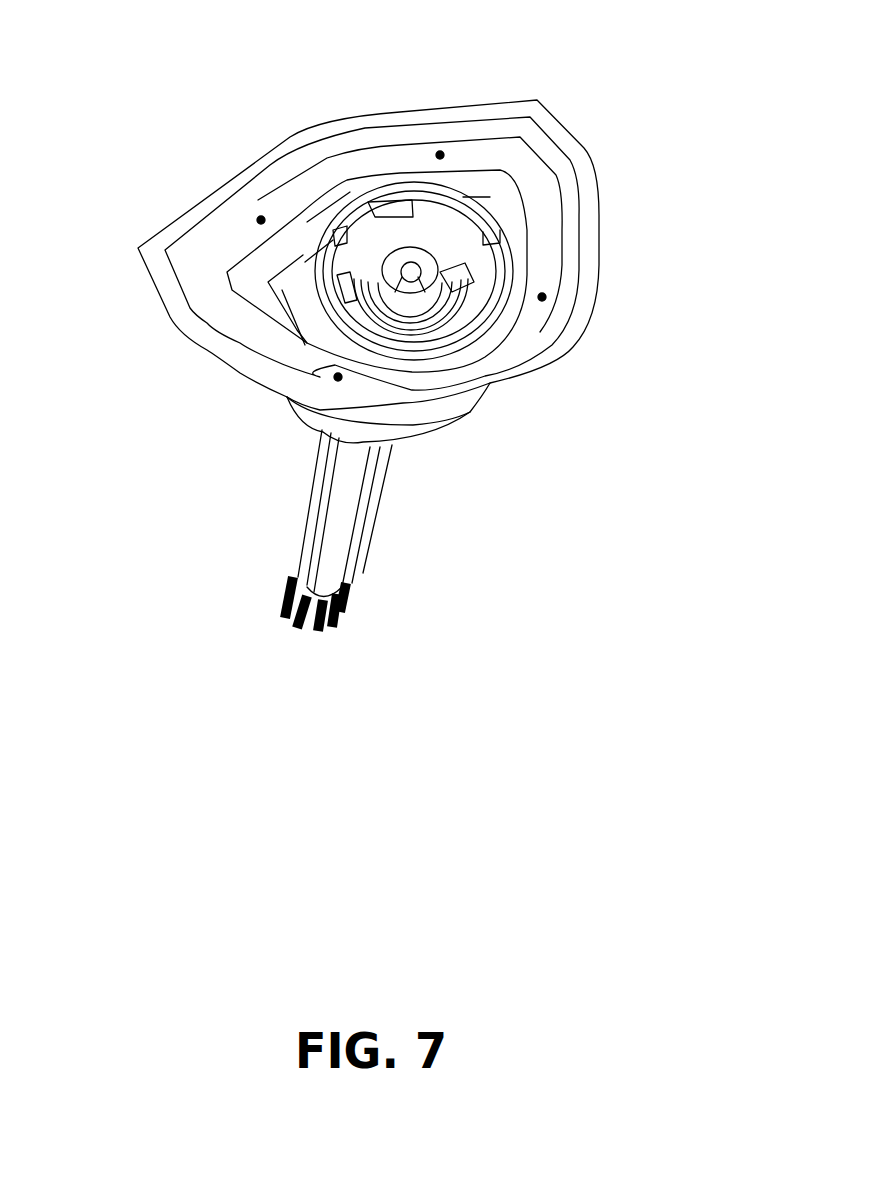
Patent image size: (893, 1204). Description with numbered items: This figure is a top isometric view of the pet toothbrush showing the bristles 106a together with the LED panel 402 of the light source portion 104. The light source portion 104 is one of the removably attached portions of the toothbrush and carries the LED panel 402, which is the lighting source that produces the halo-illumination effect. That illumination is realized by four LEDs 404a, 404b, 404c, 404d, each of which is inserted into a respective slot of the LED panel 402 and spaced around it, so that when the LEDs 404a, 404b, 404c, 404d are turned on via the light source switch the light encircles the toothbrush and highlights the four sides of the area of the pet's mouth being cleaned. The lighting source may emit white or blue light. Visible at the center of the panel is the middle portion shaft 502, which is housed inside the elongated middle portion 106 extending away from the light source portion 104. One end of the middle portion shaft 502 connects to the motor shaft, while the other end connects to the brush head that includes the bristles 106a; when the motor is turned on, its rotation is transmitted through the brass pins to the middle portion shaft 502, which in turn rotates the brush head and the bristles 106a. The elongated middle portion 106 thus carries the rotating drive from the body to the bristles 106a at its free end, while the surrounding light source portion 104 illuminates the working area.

The light source portion 104 is at (473, 113).
The LED panel 402 is at (525, 181).
The LED 404a is at (338, 377).
The LED 404b is at (261, 220).
The LED 404c is at (440, 155).
The LED 404d is at (542, 297).
The middle portion shaft 502 is at (440, 272).
The elongated middle portion 106 is at (340, 553).
The bristles 106a is at (343, 613).